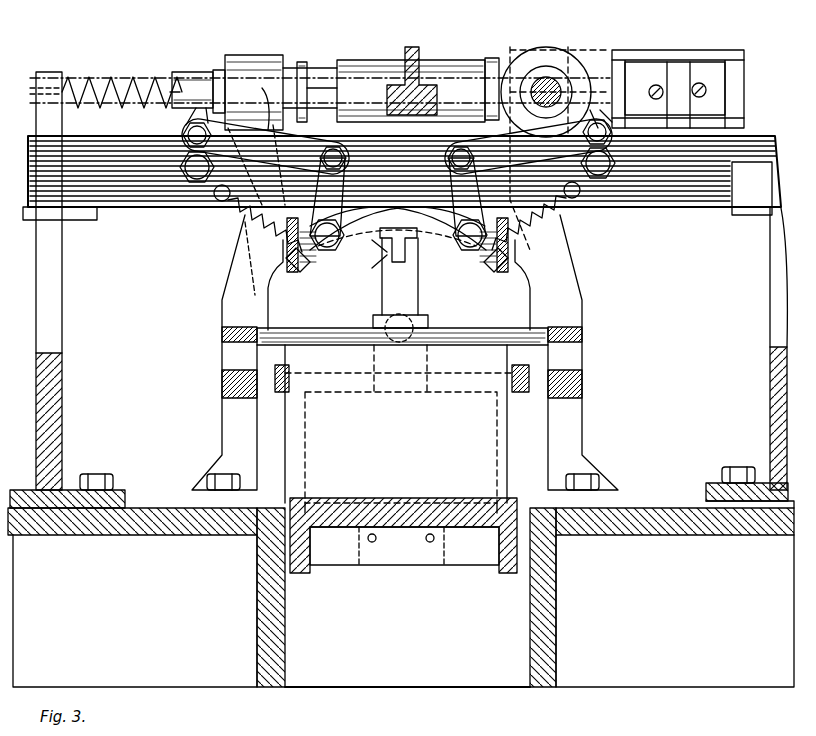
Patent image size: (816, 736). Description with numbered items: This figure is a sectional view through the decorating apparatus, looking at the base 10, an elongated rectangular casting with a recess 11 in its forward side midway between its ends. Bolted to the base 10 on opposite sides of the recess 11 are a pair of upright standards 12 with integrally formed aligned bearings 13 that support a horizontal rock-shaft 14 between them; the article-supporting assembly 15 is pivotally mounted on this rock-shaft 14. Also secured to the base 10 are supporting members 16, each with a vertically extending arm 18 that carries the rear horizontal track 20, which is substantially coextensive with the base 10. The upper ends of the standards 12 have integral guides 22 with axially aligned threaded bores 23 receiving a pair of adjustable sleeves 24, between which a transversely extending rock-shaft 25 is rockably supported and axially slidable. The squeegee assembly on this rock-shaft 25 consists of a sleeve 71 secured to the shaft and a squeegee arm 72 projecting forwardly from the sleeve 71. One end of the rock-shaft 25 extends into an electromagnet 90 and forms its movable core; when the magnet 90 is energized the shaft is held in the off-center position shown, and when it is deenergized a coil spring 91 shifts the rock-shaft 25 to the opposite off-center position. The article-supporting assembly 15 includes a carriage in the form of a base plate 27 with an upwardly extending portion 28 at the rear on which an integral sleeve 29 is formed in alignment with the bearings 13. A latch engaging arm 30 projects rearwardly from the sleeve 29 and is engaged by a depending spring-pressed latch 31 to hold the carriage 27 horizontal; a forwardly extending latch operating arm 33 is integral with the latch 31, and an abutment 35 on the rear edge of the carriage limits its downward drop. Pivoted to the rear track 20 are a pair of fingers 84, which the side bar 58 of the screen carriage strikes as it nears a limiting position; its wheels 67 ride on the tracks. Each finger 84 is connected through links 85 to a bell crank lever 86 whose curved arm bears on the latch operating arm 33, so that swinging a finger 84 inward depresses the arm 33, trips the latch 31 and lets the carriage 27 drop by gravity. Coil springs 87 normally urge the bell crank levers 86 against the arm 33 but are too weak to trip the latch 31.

The base 10 is at (107, 530).
The recess 11 is at (330, 680).
The standards 12 is at (228, 424).
The bearings 13 is at (222, 336).
The rock-shaft 14 is at (236, 348).
The article-supporting assembly 15 is at (425, 565).
The supporting members 16 is at (64, 392).
The vertically extending arm 18 is at (62, 262).
The rear track 20 is at (142, 204).
The guides 22 is at (228, 57).
The threaded bores 23 is at (258, 60).
The adjustable sleeves 24 is at (300, 64).
The rock-shaft 25 is at (316, 78).
The base plate 27 is at (468, 522).
The upwardly extending portion 28 is at (435, 450).
The sleeve 29 is at (482, 328).
The latch engaging arm 30 is at (428, 318).
The latch 31 is at (418, 285).
The latch operating arm 33 is at (378, 268).
The abutment 35 is at (357, 565).
The bar 58 is at (548, 90).
The grooved supporting wheel 67 is at (574, 62).
The sleeve 71 is at (352, 70).
The squeegee arm 72 is at (412, 48).
The fingers 84 is at (192, 116).
The links 85 is at (397, 160).
The bell crank lever 86 is at (397, 209).
The coil springs 87 is at (245, 215).
The electromagnet 90 is at (726, 72).
The coil spring 91 is at (104, 76).